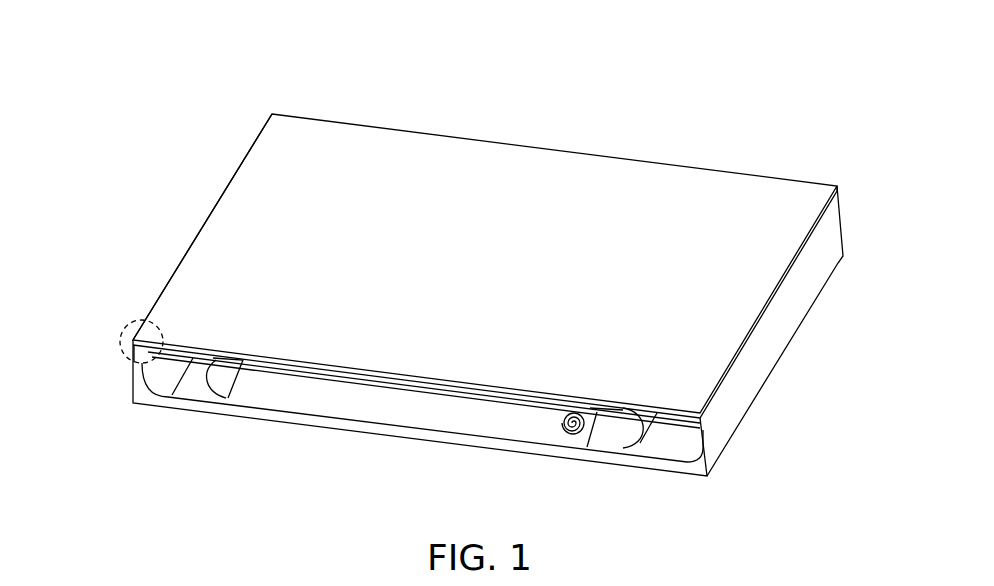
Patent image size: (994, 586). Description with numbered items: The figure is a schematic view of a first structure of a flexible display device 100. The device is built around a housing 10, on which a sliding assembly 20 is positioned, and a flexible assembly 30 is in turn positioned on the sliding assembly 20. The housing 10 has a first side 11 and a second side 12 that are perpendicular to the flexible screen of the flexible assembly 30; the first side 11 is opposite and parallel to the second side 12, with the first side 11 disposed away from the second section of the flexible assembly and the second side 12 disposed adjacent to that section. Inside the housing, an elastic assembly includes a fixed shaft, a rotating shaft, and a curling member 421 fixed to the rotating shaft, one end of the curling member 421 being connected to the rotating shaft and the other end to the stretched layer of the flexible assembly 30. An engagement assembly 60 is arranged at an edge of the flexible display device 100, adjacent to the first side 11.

The flexible display device 100 is at (308, 73).
The housing 10 is at (707, 457).
The first side 11 is at (177, 253).
The second side 12 is at (824, 250).
The sliding assembly 20 is at (130, 333).
The flexible assembly 30 is at (554, 175).
The engagement assembly 60 is at (125, 355).
The curling member 421 is at (556, 427).